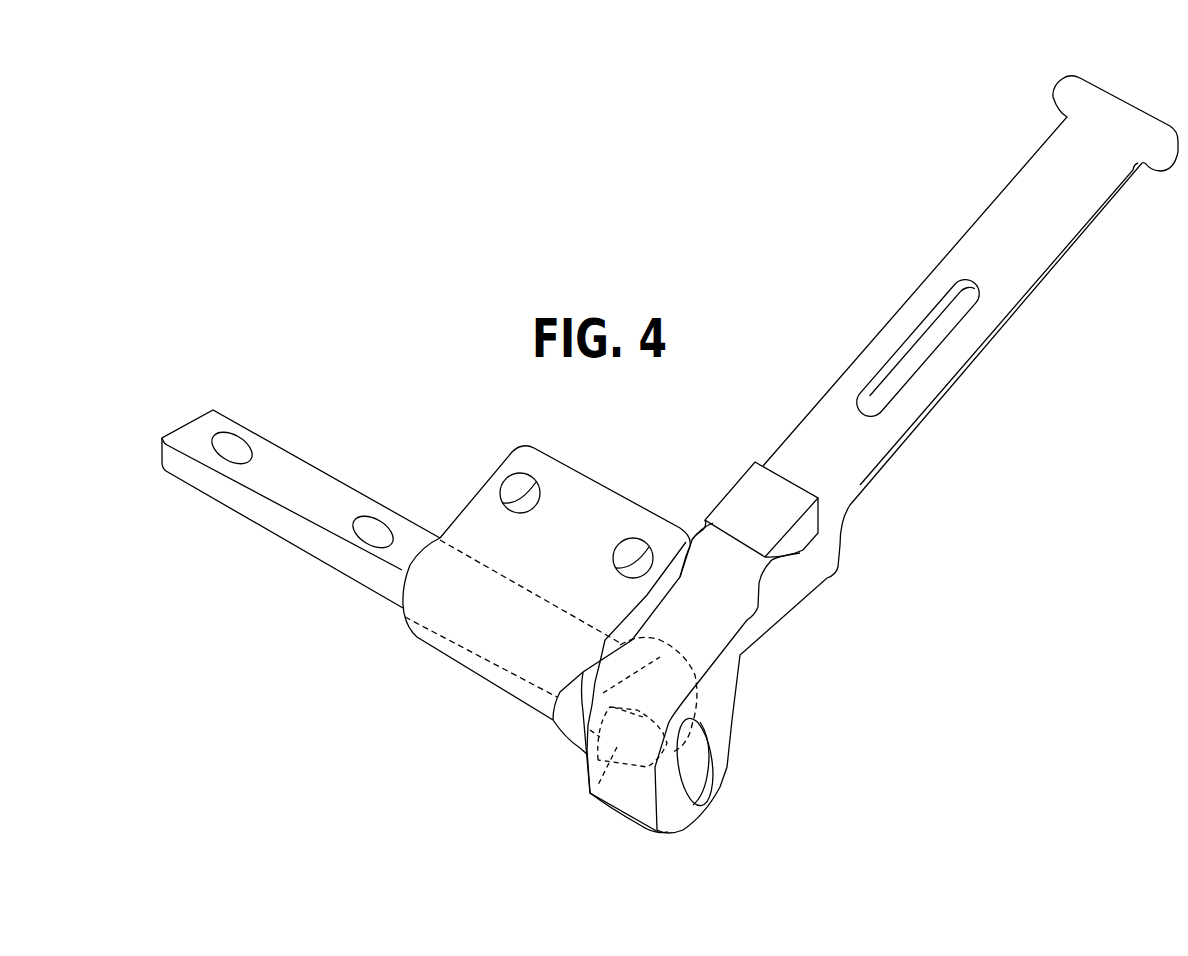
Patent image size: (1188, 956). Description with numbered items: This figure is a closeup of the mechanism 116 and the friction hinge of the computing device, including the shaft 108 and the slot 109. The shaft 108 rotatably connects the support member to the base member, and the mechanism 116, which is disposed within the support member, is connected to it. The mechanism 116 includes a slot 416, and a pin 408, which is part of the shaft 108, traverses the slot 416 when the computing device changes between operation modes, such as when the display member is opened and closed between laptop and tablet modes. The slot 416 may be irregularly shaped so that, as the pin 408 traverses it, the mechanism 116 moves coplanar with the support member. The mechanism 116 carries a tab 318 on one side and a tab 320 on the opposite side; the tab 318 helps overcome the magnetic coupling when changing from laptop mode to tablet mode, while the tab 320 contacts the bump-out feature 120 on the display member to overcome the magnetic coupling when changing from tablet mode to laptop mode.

The shaft 108 is at (293, 548).
The slot 109 is at (480, 678).
The mechanism 116 is at (917, 293).
The feature 120 is at (755, 460).
The tab 318 is at (840, 573).
The tab 320 is at (692, 535).
The pin 408 is at (588, 790).
The slot 416 is at (693, 782).